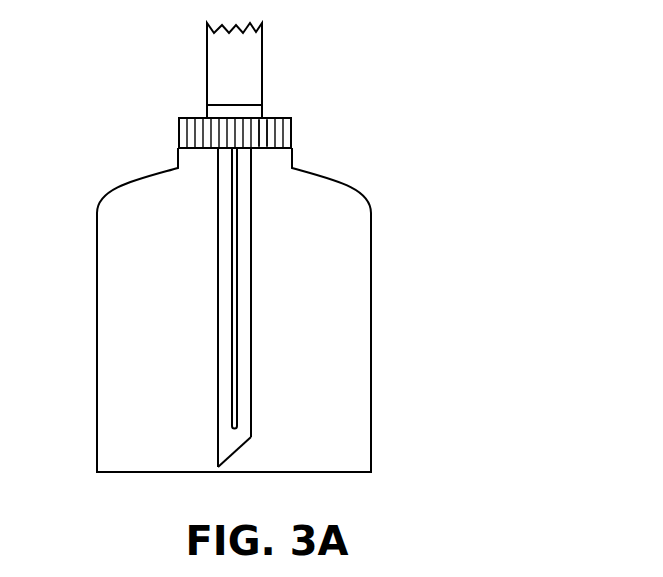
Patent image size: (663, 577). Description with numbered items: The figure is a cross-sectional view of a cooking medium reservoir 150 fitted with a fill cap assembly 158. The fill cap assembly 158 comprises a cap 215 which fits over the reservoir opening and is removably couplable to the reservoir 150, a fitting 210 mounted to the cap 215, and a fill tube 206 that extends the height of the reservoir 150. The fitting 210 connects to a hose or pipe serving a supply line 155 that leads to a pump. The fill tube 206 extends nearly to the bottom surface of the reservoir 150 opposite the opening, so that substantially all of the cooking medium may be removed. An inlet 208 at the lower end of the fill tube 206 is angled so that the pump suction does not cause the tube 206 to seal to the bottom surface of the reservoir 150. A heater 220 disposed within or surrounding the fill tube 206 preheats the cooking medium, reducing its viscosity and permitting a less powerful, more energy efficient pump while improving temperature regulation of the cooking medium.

The cooking medium reservoir 150 is at (371, 255).
The supply line 155 is at (247, 70).
The fill cap assembly 158 is at (282, 133).
The fill tube 206 is at (252, 348).
The inlet 208 is at (240, 448).
The fitting 210 is at (255, 108).
The cap 215 is at (182, 132).
The heater 220 is at (232, 268).